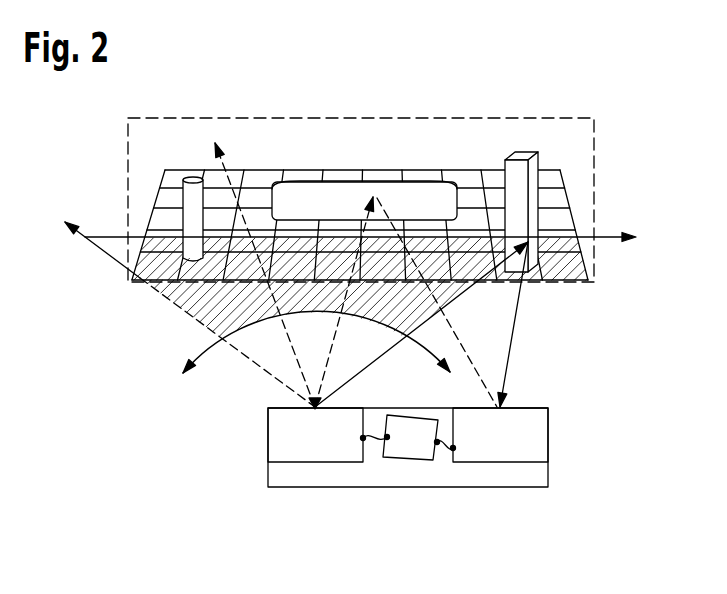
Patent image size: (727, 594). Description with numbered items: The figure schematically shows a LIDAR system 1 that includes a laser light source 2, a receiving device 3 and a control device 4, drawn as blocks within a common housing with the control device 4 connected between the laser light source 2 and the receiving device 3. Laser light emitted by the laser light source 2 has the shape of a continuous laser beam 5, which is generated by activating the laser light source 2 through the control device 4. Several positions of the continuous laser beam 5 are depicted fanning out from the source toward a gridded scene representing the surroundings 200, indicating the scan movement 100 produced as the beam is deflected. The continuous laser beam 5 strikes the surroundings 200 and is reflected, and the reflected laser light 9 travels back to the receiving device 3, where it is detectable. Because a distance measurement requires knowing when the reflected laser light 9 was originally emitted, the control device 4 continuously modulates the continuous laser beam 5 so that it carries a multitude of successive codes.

The LIDAR system 1 is at (268, 470).
The laser light source 2 is at (313, 462).
The receiving device 3 is at (505, 462).
The control device 4 is at (420, 460).
The continuous laser beam 5 is at (188, 319).
The reflected laser light 9 is at (517, 330).
The scan movement 100 is at (205, 351).
The surroundings 200 is at (597, 160).